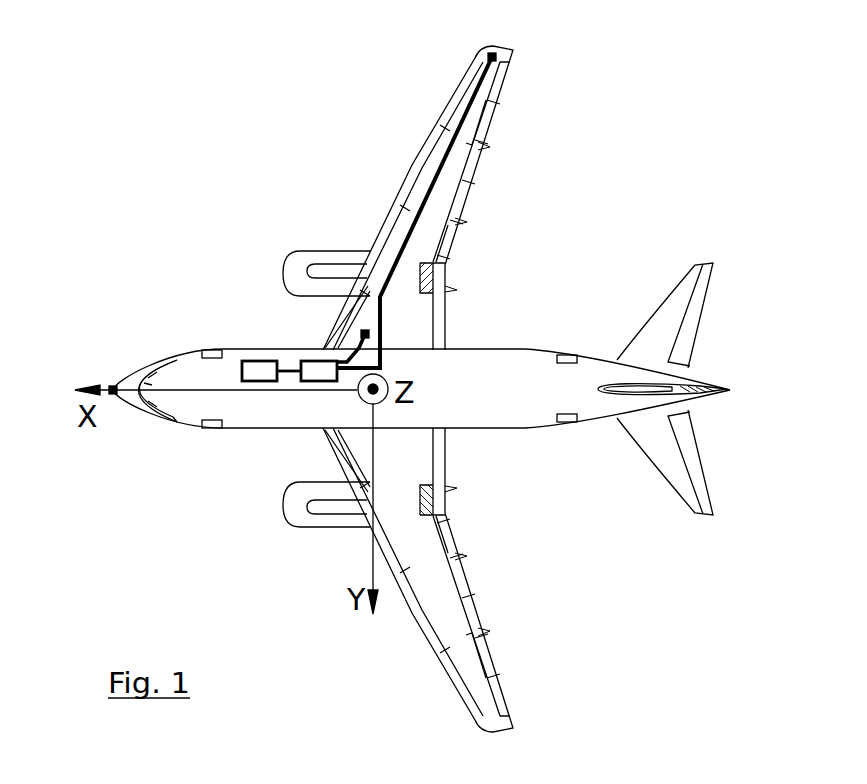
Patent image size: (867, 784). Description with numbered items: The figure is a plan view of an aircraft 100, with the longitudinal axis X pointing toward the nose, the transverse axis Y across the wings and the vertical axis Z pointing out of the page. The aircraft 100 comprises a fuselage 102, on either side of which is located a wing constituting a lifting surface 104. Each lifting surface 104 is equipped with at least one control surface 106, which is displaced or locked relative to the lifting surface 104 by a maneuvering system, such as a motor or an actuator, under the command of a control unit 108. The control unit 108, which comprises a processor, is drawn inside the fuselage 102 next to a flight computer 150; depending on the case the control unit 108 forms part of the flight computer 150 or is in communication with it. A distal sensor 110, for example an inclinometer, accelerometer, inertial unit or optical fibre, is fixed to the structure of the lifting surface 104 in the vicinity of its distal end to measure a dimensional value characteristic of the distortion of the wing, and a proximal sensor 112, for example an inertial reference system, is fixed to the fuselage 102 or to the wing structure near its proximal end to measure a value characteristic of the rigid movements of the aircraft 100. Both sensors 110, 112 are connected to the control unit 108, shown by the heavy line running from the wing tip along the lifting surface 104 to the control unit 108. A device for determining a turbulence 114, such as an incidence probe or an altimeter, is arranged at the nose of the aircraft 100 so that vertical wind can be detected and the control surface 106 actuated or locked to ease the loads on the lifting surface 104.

The aircraft 100 is at (690, 134).
The fuselage 102 is at (595, 405).
The lifting surface 104 is at (440, 150).
The control surface 106 is at (438, 243).
The control unit 108 is at (318, 372).
The distal sensor 110 is at (493, 50).
The proximal sensor 112 is at (366, 334).
The device for determining a turbulence 114 is at (113, 386).
The flight computer 150 is at (257, 372).